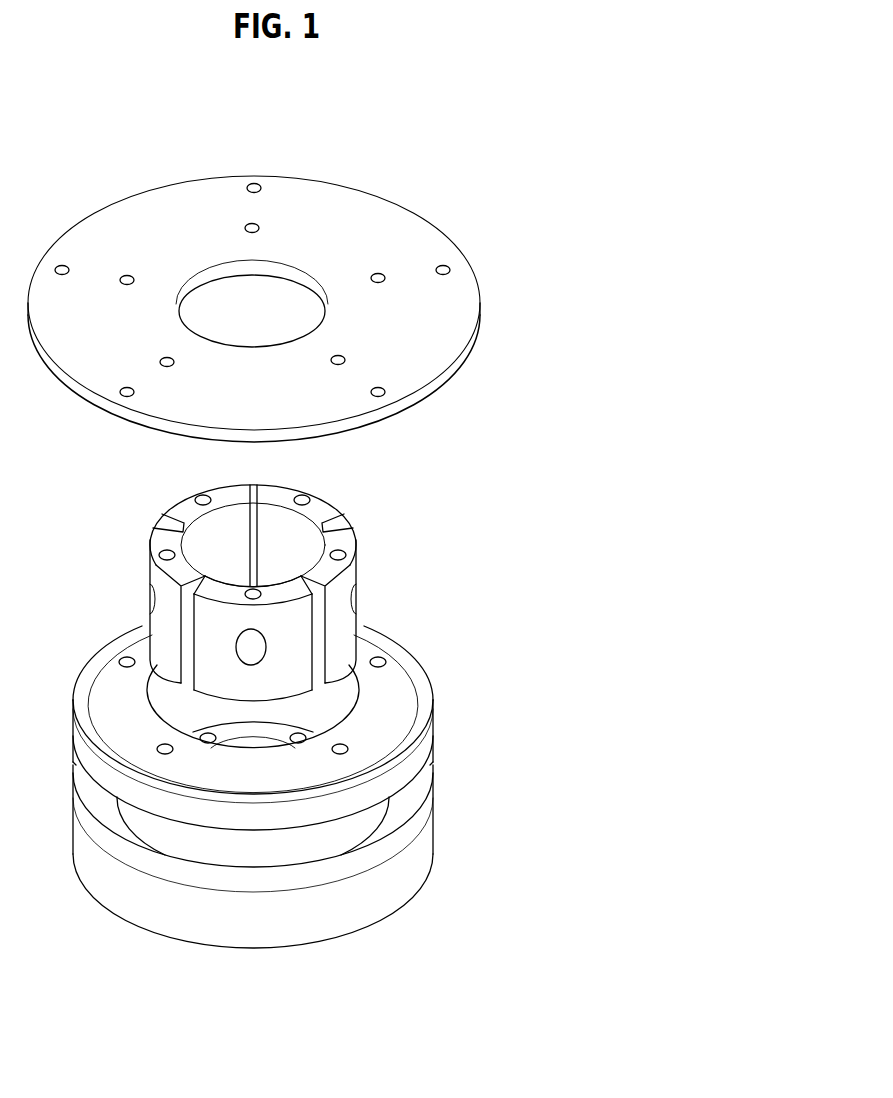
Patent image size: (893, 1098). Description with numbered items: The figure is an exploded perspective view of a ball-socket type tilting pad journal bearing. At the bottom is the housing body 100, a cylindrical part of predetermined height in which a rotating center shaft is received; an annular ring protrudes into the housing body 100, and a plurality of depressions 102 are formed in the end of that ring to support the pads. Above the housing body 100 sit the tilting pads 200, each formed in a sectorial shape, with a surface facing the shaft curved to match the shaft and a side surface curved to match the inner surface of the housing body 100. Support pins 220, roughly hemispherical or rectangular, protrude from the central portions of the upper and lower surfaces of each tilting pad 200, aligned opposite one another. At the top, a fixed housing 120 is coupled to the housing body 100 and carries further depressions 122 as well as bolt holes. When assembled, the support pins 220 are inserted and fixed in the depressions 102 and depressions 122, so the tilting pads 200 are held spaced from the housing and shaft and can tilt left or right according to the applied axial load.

The housing body 100 is at (448, 816).
The depressions 102 is at (305, 733).
The fixed housing 120 is at (473, 248).
The depressions 122 is at (378, 270).
The tilting pads 200 is at (368, 567).
The support pins 220 is at (308, 498).